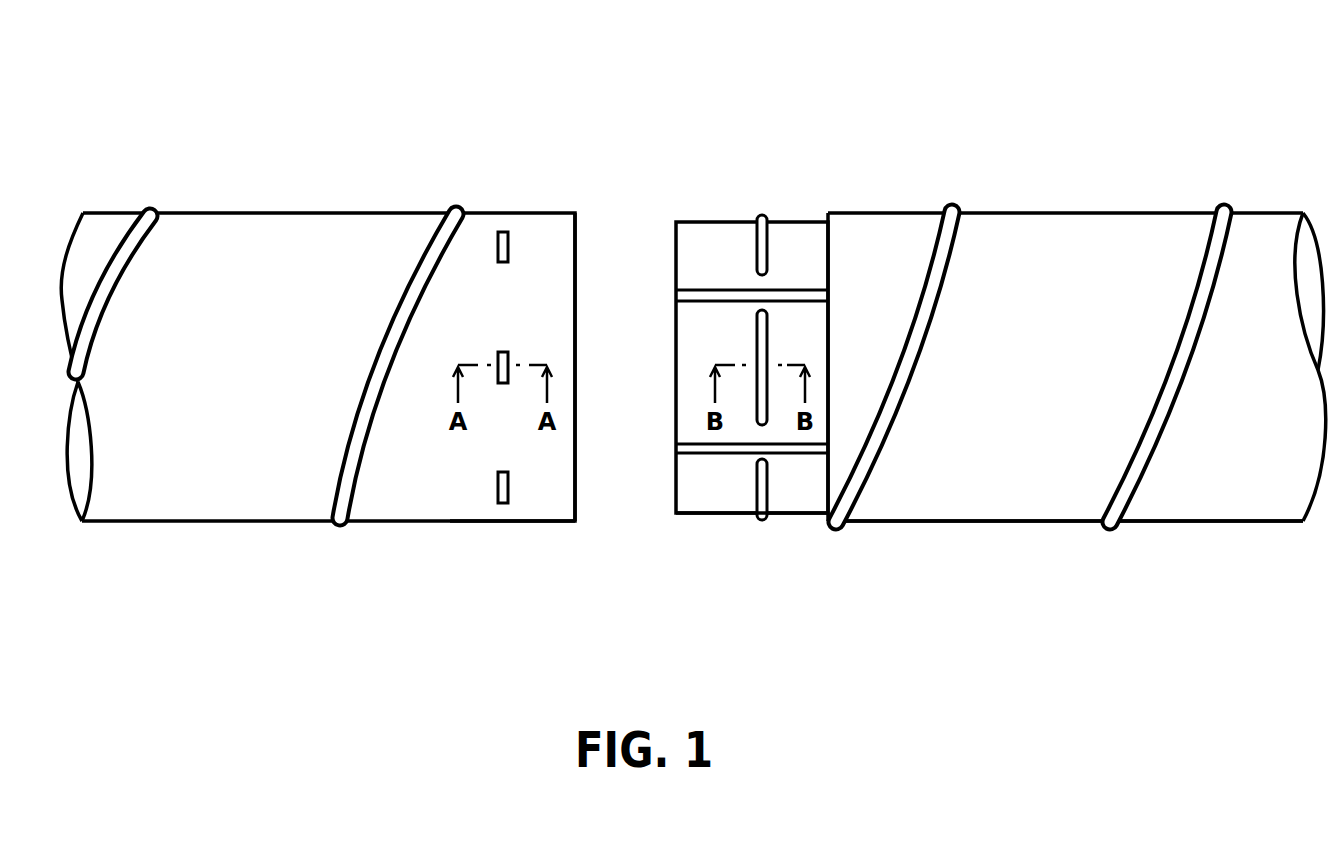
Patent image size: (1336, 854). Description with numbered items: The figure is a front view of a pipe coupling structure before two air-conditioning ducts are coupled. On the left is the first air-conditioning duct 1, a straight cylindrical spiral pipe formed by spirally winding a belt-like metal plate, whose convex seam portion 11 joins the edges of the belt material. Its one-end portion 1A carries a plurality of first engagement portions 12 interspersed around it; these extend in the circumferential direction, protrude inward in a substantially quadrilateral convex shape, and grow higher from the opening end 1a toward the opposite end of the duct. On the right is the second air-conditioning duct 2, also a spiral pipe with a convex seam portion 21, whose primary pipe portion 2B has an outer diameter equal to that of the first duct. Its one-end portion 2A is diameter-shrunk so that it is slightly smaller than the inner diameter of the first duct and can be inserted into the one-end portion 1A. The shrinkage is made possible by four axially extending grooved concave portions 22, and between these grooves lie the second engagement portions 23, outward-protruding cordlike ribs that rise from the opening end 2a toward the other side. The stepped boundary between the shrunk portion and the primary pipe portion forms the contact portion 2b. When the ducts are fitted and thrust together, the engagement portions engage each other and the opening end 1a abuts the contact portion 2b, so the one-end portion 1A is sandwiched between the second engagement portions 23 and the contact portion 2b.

The first air-conditioning duct 1 is at (273, 150).
The convex seam portion 11 is at (122, 243).
The first engagement portion 12 is at (511, 238).
The opening end 1a is at (577, 232).
The one-end portion 1A is at (533, 525).
The second air-conditioning duct 2 is at (975, 140).
The opening end 2a is at (676, 482).
The contact portion 2b is at (828, 250).
The one-end portion 2A is at (803, 525).
The primary pipe portion 2B is at (957, 530).
The convex seam portion 21 is at (957, 243).
The grooved concave portion 22 is at (705, 292).
The second engagement portion 23 is at (770, 240).